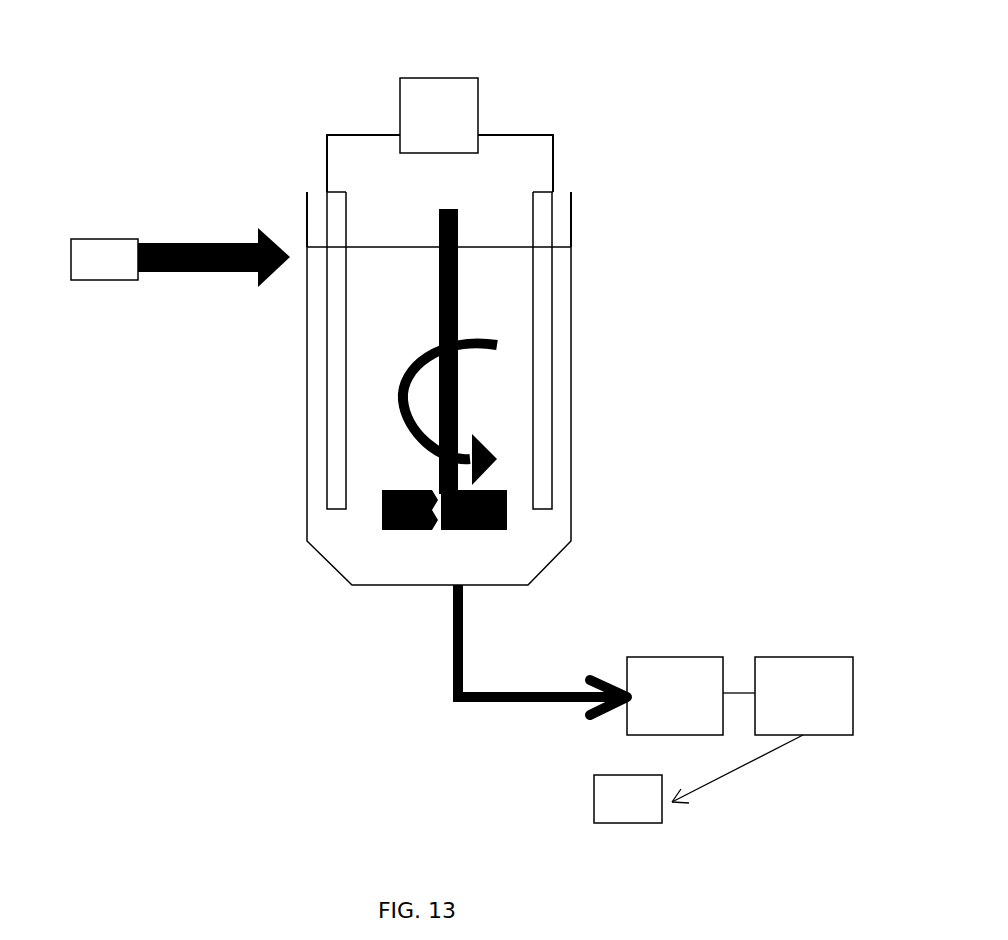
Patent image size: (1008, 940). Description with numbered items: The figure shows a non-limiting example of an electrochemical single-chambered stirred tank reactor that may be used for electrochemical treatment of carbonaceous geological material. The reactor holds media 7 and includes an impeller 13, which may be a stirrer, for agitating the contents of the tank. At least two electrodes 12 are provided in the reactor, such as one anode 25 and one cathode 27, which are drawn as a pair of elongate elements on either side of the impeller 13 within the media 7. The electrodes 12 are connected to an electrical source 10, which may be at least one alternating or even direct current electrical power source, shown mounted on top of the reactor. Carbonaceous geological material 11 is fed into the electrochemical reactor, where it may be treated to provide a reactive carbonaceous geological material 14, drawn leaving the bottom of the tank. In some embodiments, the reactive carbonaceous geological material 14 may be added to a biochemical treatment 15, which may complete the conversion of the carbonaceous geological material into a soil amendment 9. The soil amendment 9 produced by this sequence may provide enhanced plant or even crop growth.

The media 7 is at (520, 528).
The soil amendment 9 is at (624, 792).
The electrical source 10 is at (443, 95).
The carbonaceous geological material 11 is at (107, 260).
The electrodes 12 is at (550, 216).
The impeller 13 is at (365, 530).
The reactive carbonaceous geological material 14 is at (668, 688).
The biochemical treatment 15 is at (204, 245).
The anode 25 is at (340, 395).
The cathode 27 is at (538, 422).